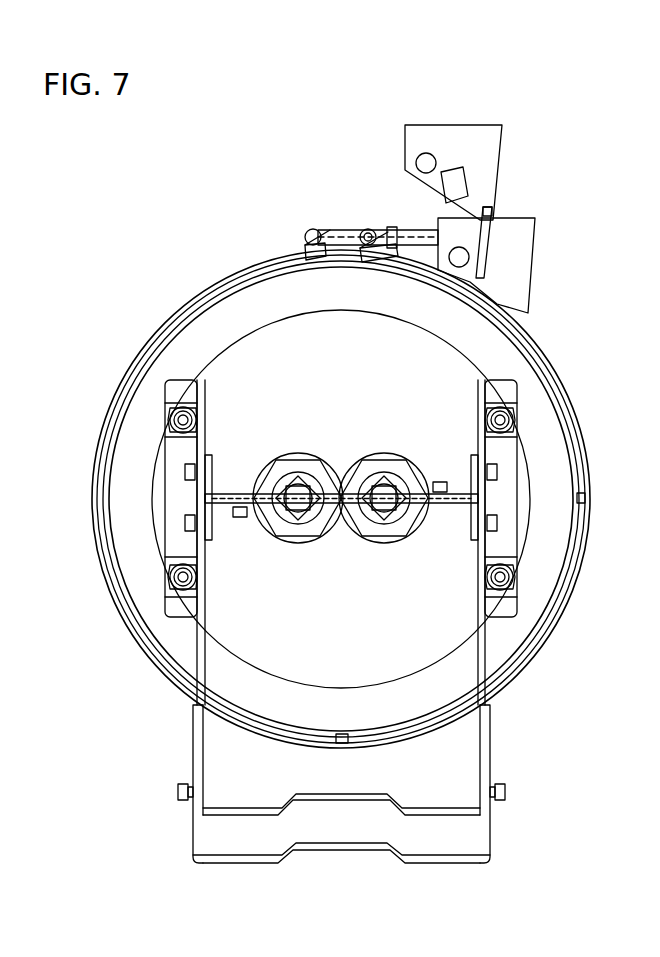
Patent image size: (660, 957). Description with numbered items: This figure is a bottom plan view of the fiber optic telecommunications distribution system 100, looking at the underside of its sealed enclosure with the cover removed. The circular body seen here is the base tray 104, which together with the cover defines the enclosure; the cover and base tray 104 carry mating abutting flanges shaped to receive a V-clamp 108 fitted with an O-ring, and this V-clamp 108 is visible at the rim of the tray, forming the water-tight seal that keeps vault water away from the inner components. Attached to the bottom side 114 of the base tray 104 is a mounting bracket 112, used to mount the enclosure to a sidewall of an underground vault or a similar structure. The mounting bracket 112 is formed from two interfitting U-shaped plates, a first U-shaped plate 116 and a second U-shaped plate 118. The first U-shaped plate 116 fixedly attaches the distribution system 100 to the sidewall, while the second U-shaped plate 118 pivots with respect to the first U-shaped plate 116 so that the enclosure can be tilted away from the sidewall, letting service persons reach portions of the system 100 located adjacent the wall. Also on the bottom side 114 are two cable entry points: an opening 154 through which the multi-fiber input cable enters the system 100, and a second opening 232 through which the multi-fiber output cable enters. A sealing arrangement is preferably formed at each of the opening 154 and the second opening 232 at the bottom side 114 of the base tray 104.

The fiber optic telecommunications distribution system 100 is at (574, 152).
The base tray 104 is at (570, 417).
The V-clamp 108 is at (522, 255).
The mounting bracket 112 is at (483, 737).
The bottom side 114 is at (357, 598).
The first U-shaped plate 116 is at (447, 862).
The second U-shaped plate 118 is at (457, 812).
The opening 154 is at (384, 490).
The second opening 232 is at (297, 490).